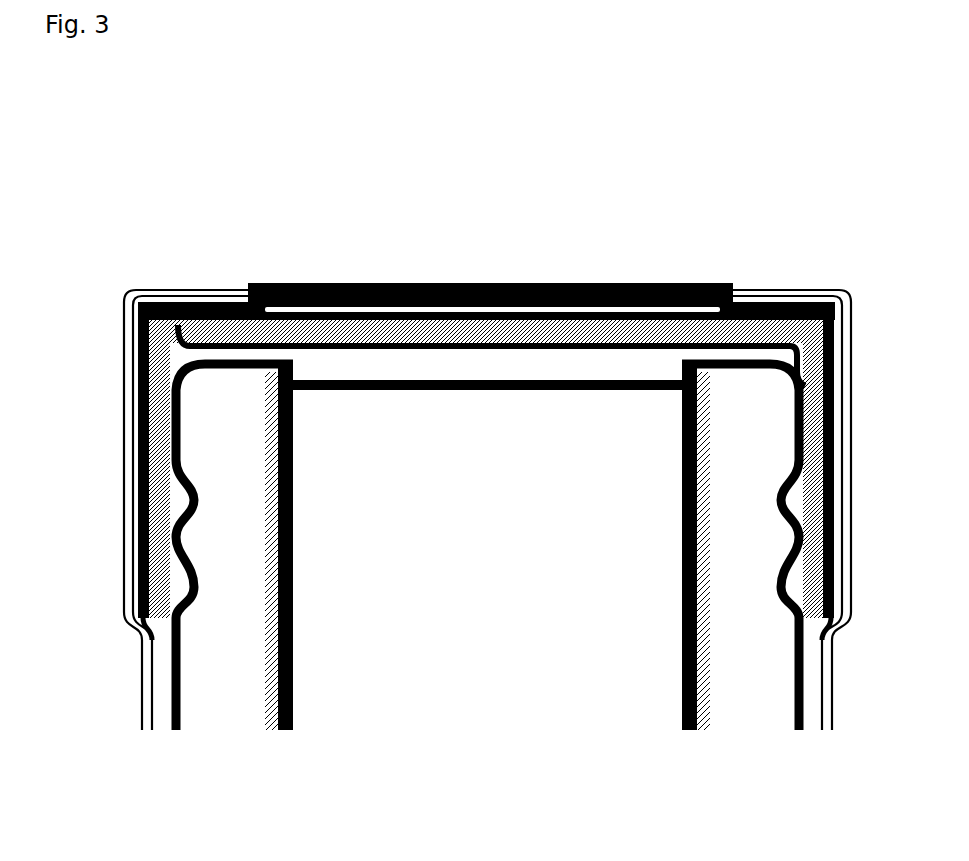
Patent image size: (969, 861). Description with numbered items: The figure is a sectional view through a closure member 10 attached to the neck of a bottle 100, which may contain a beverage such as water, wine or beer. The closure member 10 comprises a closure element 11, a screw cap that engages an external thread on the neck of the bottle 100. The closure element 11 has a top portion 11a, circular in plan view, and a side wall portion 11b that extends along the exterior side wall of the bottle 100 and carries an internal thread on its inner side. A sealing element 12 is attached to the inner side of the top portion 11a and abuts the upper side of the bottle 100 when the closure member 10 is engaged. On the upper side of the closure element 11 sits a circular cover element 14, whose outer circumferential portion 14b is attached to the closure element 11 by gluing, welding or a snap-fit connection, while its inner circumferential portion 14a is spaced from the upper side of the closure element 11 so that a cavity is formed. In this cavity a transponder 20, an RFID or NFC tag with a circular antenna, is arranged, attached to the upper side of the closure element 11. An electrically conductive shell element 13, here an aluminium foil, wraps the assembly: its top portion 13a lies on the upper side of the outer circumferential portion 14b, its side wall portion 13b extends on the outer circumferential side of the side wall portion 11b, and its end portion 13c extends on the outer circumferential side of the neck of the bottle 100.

The closure member 10 is at (663, 184).
The closure element 11 is at (412, 472).
The top portion 11a is at (545, 330).
The side wall portion 11b is at (148, 480).
The sealing element 12 is at (520, 367).
The electrically conductive shell element 13 is at (435, 475).
The top portion 13a is at (193, 293).
The side wall portion 13b is at (123, 462).
The end portion 13c is at (140, 697).
The cover element 14 is at (542, 240).
The inner circumferential portion 14a is at (683, 290).
The outer circumferential portion 14b is at (770, 310).
The transponder 20 is at (455, 318).
The bottle 100 is at (255, 703).